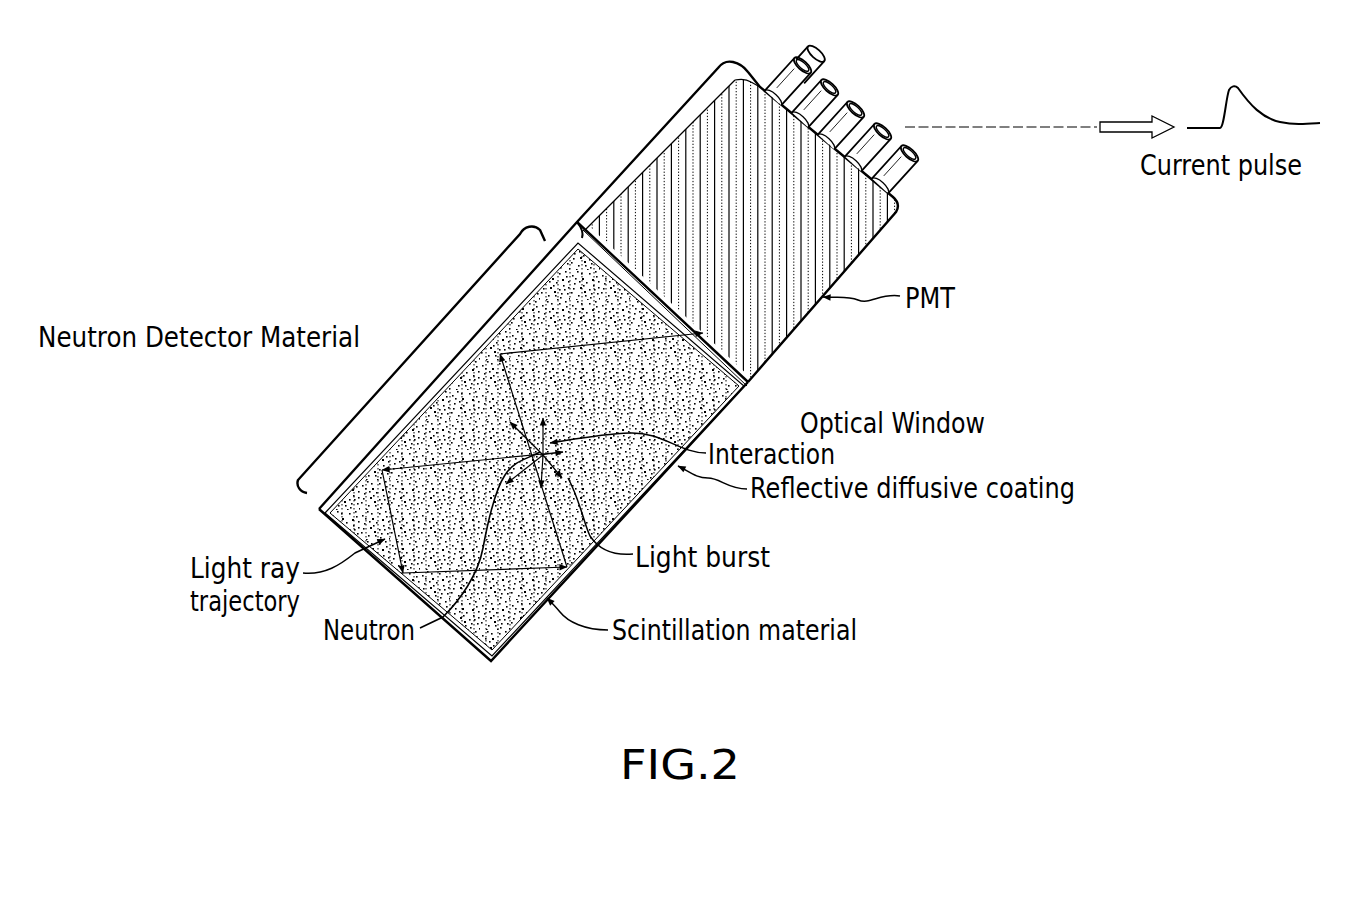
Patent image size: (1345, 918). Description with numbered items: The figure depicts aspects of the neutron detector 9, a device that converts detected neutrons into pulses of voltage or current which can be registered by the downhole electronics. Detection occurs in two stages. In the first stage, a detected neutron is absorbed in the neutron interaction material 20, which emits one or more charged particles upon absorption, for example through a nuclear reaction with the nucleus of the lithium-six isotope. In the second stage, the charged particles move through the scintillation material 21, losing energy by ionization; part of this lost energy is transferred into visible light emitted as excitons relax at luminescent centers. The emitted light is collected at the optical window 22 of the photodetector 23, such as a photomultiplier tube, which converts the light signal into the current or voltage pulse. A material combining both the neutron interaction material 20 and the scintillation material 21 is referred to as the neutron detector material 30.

The neutron detector 9 is at (387, 143).
The neutron detector material 30 is at (418, 346).
The photodetector 23 is at (770, 323).
The optical window 22 is at (741, 391).
The neutron interaction material 20 is at (620, 479).
The scintillation material 21 is at (490, 617).